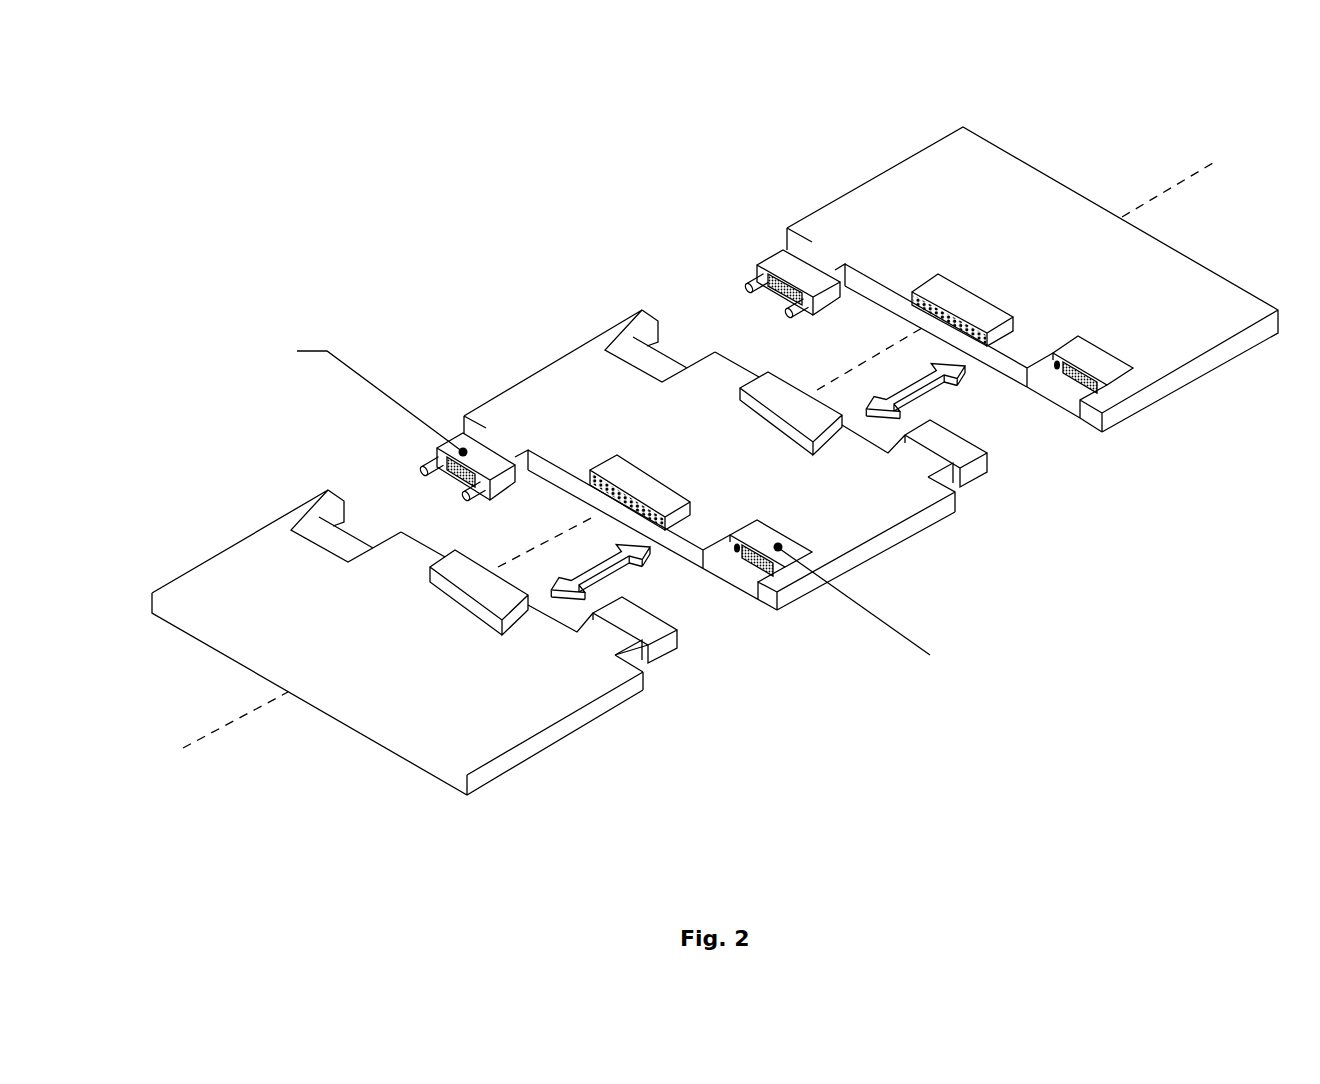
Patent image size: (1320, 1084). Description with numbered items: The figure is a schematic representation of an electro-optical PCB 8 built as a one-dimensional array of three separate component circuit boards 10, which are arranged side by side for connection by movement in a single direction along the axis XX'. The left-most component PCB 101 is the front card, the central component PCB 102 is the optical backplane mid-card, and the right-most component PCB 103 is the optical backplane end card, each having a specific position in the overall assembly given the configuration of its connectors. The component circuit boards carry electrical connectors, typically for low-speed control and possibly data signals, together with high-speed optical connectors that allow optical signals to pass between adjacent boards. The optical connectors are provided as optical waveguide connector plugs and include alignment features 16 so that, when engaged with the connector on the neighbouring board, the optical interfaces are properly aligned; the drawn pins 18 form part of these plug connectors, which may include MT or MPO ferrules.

The electro-optical PCB 8 is at (633, 190).
The component circuit boards 10 is at (715, 498).
The front card 101 is at (472, 680).
The optical backplane mid-card 102 is at (647, 494).
The optical backplane end card 103 is at (1178, 335).
The alignment features 16 is at (356, 401).
The guide pins of connector plug 18 is at (452, 482).